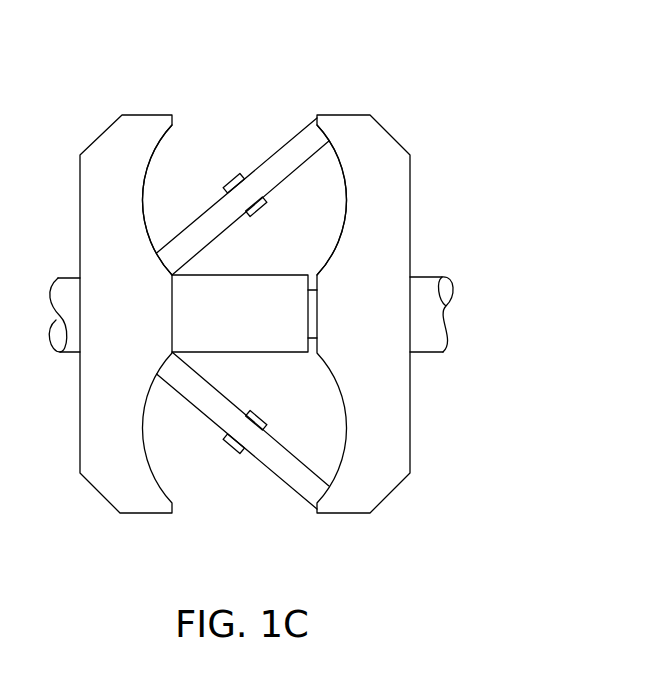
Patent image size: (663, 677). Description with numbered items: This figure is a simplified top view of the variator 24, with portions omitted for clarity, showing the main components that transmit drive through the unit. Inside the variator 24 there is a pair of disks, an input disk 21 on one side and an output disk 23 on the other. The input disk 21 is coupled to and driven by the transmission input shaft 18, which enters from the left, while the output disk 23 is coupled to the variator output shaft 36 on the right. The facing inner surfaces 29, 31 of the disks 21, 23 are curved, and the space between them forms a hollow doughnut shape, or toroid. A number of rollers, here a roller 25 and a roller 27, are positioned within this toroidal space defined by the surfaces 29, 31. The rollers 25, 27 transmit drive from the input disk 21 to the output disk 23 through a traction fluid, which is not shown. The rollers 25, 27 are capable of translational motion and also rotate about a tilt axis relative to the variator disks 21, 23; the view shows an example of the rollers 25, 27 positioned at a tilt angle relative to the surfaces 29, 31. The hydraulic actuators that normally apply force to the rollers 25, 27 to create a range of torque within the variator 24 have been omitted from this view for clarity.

The variator 24 is at (497, 73).
The input disk 21 is at (106, 144).
The output disk 23 is at (384, 140).
The roller 25 is at (285, 145).
The roller 27 is at (283, 482).
The inner surface 29 is at (152, 194).
The inner surface 31 is at (337, 223).
The transmission input shaft 18 is at (63, 283).
The variator output shaft 36 is at (427, 283).